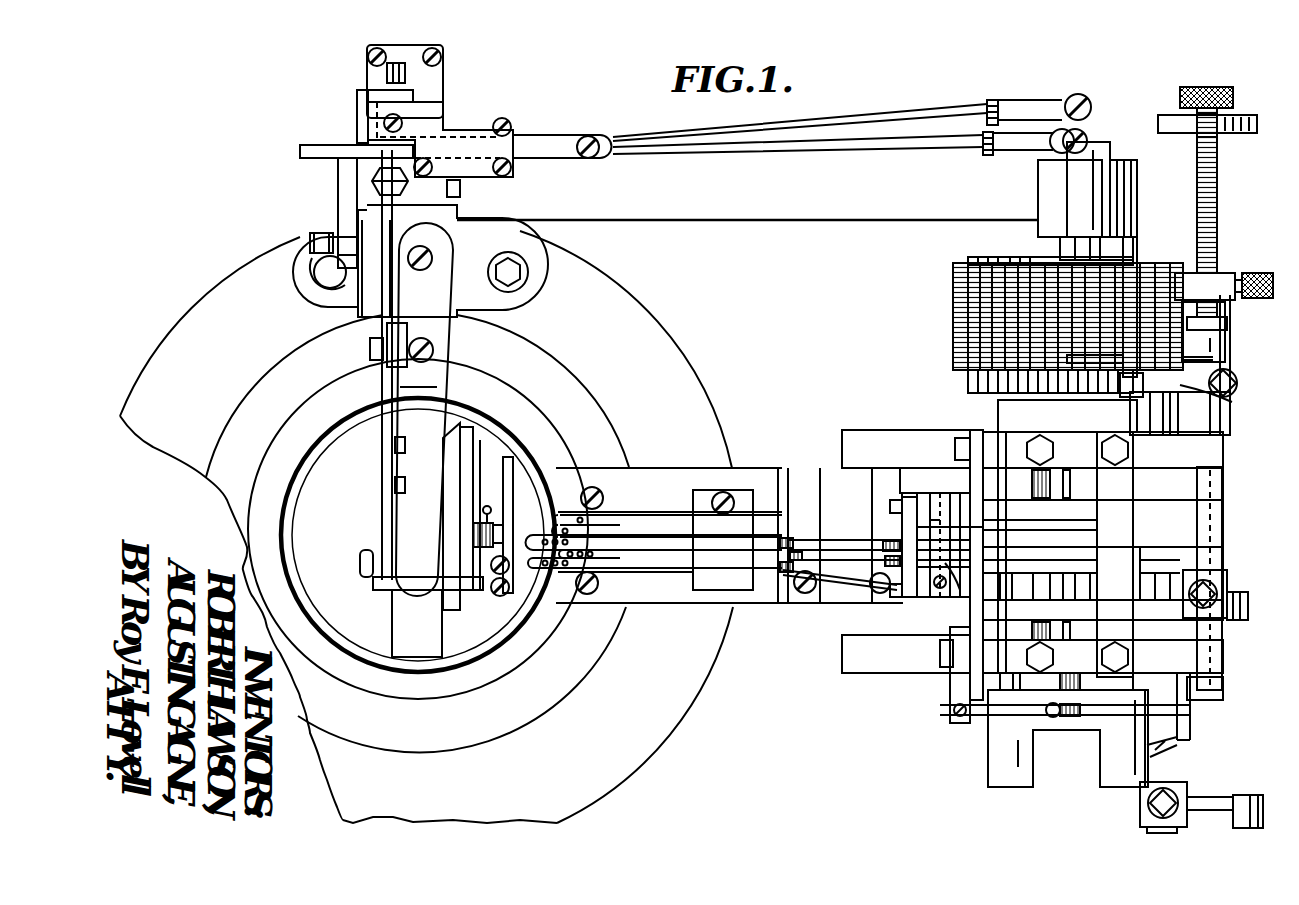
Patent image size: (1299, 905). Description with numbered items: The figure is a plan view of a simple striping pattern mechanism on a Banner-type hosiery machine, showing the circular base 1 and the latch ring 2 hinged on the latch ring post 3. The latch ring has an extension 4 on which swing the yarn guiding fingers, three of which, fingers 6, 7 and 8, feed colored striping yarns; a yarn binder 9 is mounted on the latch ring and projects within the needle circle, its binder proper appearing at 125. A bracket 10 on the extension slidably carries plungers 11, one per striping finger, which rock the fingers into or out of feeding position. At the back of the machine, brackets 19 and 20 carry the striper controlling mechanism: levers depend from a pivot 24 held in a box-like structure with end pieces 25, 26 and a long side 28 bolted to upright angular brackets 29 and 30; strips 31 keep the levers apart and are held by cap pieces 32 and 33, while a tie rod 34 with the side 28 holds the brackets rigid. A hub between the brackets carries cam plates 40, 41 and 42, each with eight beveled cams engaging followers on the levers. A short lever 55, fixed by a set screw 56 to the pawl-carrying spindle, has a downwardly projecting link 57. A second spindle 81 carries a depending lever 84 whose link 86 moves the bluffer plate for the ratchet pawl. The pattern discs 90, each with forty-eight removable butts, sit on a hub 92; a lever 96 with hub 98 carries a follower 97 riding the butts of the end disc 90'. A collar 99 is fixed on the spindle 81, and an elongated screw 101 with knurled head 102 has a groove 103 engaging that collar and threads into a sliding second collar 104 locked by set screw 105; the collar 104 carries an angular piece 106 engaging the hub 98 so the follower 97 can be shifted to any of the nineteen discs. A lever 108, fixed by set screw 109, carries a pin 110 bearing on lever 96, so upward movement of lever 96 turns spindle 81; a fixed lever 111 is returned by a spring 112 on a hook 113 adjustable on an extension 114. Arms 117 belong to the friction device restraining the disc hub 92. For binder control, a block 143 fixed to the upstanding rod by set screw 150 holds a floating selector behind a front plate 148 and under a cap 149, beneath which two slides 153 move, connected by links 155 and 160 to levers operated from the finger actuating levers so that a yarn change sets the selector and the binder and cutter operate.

The circular base 1 is at (464, 527).
The latch ring 2 is at (417, 533).
The latch ring post 3 is at (480, 317).
The extension 4 is at (655, 470).
The yarn guiding finger 6 is at (616, 556).
The yarn guiding finger 7 is at (642, 556).
The yarn guiding finger 8 is at (666, 556).
The yarn binder 9 is at (380, 482).
The bracket 10 is at (840, 590).
The plungers 11 is at (832, 542).
The bracket 19 is at (906, 654).
The bracket 20 is at (926, 432).
The pivot 24 is at (941, 532).
The end piece 25 is at (928, 590).
The end piece 26 is at (960, 500).
The side 28 is at (983, 483).
The angular bracket 29 is at (1103, 665).
The angular bracket 30 is at (994, 432).
The strips 31 is at (958, 592).
The cap piece 32 is at (907, 520).
The cap piece 33 is at (983, 524).
The tie rod 34 is at (1115, 554).
The plate 40 is at (1030, 568).
The plate 41 is at (1055, 560).
The plate 42 is at (1145, 545).
The short lever 55 is at (1210, 797).
The set screw 56 is at (1148, 805).
The link 57 is at (1235, 815).
The second spindle 81 is at (1205, 487).
The depending lever 84 is at (1232, 595).
The link 86 is at (1238, 628).
The pattern discs 90 is at (1045, 316).
The pattern disc 90' is at (1019, 373).
The hub 92 is at (1005, 256).
The lever 96 is at (1213, 358).
The follower 97 is at (1100, 390).
The hub 98 is at (1200, 337).
The collar 99 is at (1165, 118).
The elongated screw 101 is at (1220, 195).
The knurled head 102 is at (1188, 90).
The groove 103 is at (1205, 130).
The second collar 104 is at (1205, 295).
The set screw 105 is at (1255, 272).
The angular piece 106 is at (1227, 322).
The lever 108 is at (1232, 402).
The set screw 109 is at (1237, 383).
The pin 110 is at (1140, 248).
The fixed lever 111 is at (1205, 690).
The spring 112 is at (1185, 725).
The hook 113 is at (1020, 718).
The extension 114 is at (960, 727).
The arms 117 is at (1045, 192).
The binder 125 is at (468, 465).
The block 143 is at (443, 82).
The front plate 148 is at (355, 118).
The top plate 149 is at (443, 108).
The set screw 150 is at (460, 188).
The slides 153 is at (548, 135).
The link 155 is at (873, 150).
The link 160 is at (875, 112).